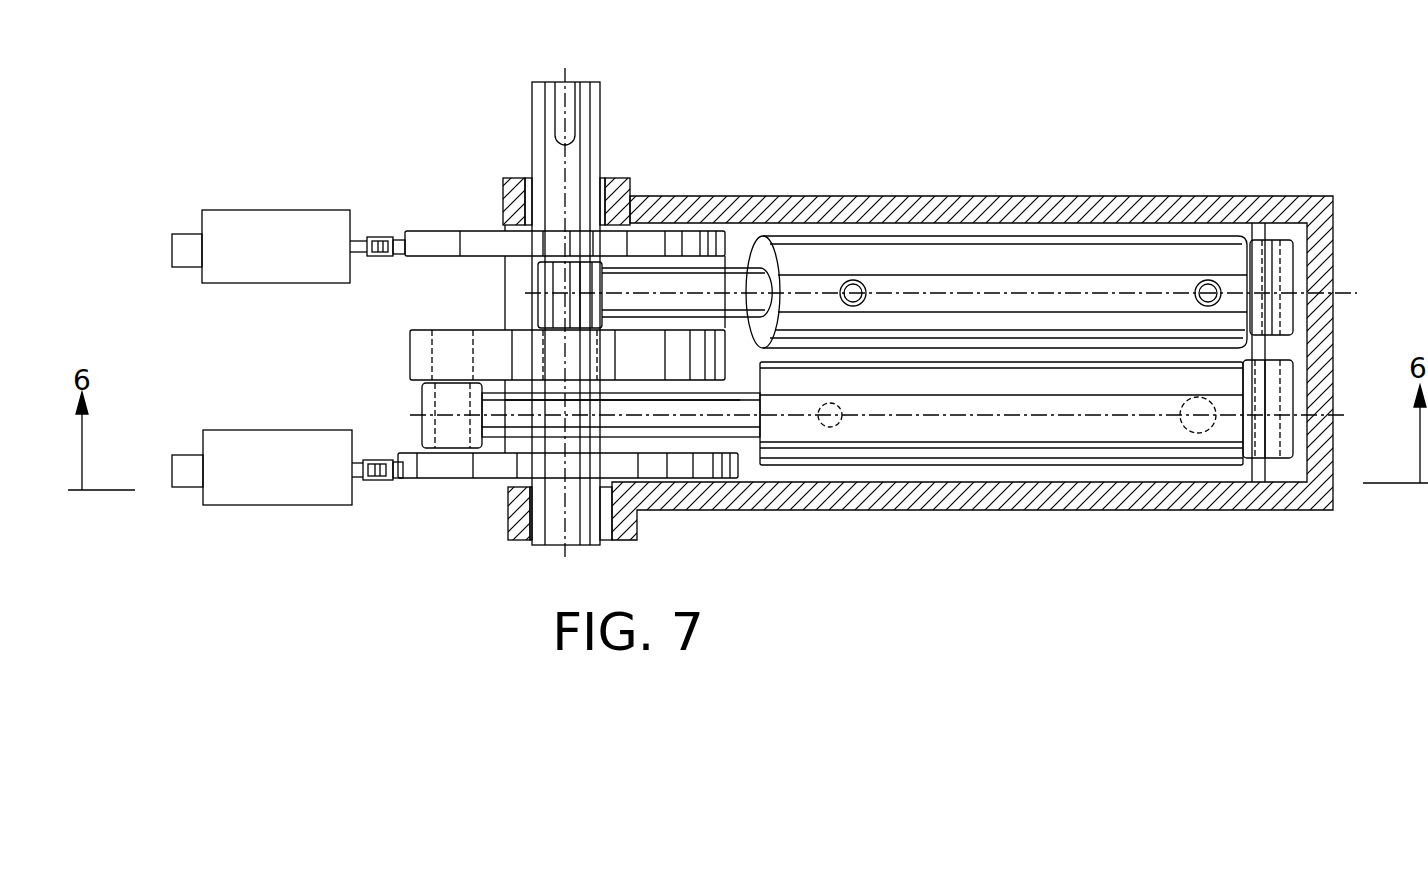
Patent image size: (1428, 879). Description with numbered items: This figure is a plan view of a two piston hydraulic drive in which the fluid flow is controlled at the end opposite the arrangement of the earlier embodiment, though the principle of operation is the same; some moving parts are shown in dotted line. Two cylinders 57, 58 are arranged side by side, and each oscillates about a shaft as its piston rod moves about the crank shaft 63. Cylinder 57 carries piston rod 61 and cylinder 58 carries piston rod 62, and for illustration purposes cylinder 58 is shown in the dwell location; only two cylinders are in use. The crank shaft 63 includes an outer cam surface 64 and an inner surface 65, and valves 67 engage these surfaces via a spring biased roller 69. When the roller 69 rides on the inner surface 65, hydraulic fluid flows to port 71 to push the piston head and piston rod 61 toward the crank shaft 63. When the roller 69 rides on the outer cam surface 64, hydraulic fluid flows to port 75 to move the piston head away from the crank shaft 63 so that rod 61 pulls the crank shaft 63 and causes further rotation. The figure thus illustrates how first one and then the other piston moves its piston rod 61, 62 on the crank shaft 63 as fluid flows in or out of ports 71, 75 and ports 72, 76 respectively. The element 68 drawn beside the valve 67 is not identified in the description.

The cylinder 57 is at (1048, 258).
The cylinder 58 is at (920, 447).
The piston rod 61 is at (700, 278).
The piston rod 62 is at (680, 420).
The crank shaft 63 is at (445, 242).
The outer cam surface 64 is at (403, 257).
The inner surface 65 is at (408, 480).
The valve 67 is at (292, 445).
The first motor 68 is at (290, 222).
The spring biased roller 69 is at (375, 238).
The port 71 is at (1210, 282).
The port 72 is at (1196, 420).
The port 75 is at (855, 282).
The port 76 is at (822, 422).